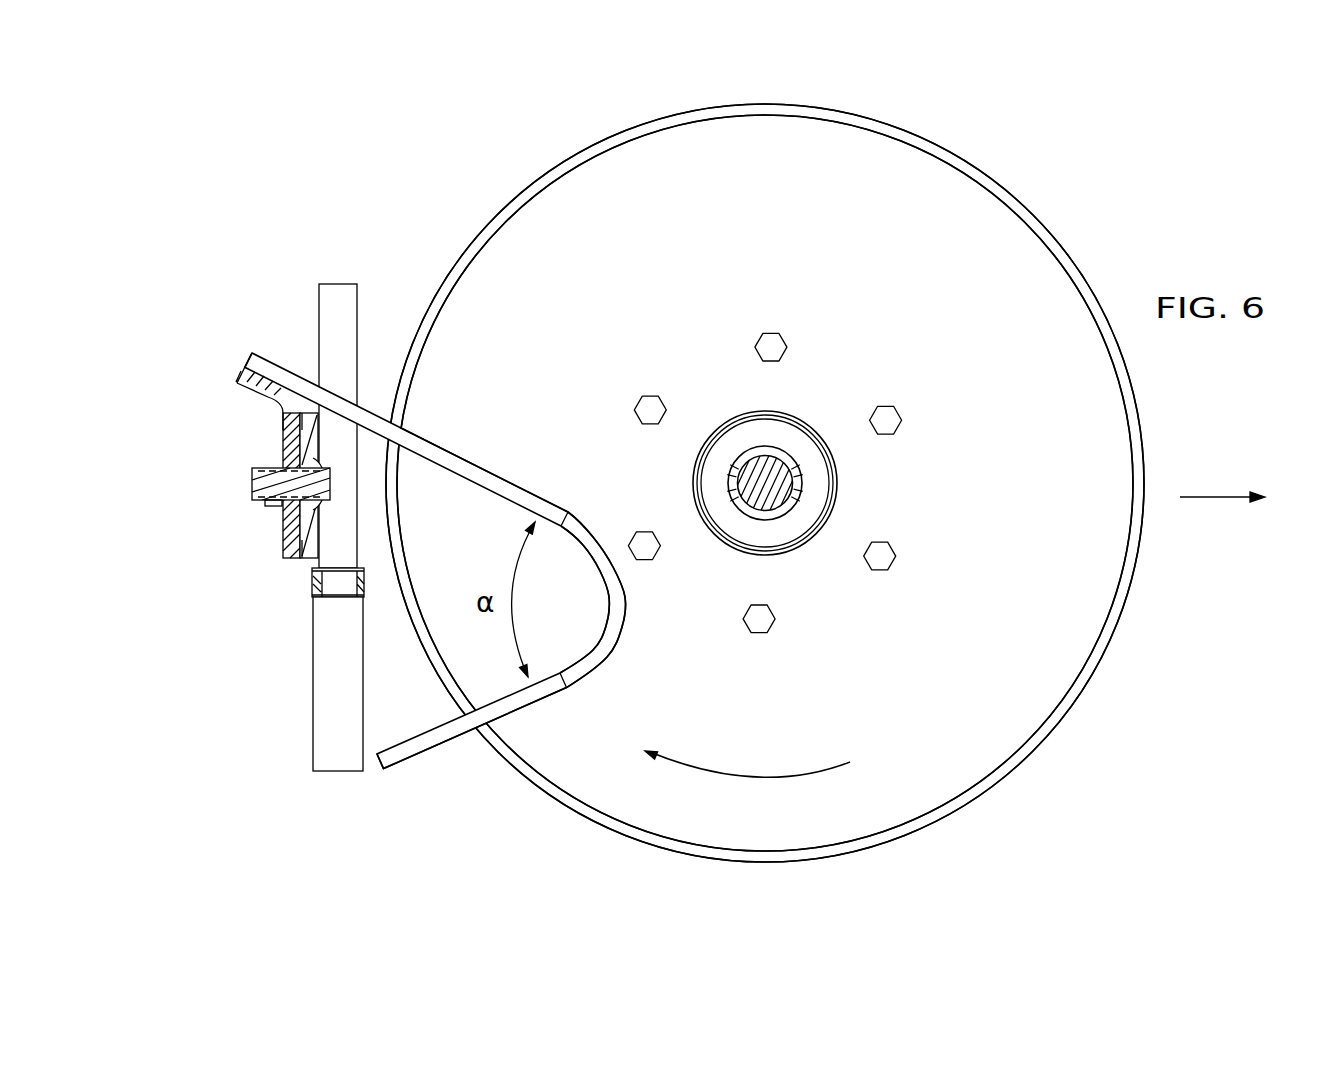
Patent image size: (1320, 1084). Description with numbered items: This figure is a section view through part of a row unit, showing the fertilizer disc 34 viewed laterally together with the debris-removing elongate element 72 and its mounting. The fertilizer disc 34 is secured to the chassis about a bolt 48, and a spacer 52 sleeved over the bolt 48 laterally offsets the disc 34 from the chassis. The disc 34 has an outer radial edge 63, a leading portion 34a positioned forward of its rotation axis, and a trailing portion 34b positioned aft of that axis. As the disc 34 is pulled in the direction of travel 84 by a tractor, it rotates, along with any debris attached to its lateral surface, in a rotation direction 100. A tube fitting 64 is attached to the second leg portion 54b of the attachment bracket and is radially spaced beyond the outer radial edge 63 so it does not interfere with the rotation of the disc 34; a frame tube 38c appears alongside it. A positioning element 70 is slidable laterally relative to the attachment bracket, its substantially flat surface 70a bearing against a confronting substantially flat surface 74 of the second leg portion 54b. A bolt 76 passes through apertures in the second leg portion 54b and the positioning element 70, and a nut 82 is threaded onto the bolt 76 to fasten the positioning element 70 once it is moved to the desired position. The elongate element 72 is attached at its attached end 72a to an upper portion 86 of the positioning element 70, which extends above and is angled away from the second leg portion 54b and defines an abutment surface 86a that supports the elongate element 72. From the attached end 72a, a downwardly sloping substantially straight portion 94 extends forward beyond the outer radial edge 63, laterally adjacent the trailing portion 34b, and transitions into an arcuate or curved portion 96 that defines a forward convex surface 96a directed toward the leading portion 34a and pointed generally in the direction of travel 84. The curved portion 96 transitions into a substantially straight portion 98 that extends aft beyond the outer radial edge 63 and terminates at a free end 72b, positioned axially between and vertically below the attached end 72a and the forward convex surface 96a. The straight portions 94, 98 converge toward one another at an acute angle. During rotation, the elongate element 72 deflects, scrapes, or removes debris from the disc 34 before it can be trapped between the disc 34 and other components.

The fertilizer disc 34 is at (688, 817).
The leading portion of the disc 34a is at (982, 230).
The trailing portion of the disc 34b is at (486, 292).
The outer radial edge 63 is at (582, 148).
The bolt 48 is at (765, 465).
The spacer 52 is at (777, 448).
The tube fitting 64 is at (330, 307).
The frame tube 38c is at (327, 697).
The elongate element 72 is at (502, 482).
The attached end 72a is at (268, 360).
The free end 72b is at (398, 770).
The substantially flat surface 74 is at (316, 452).
The substantially straight portion 94 is at (445, 443).
The arcuate or curved portion 96 is at (607, 608).
The forward convex surface 96a is at (627, 597).
The substantially straight portion 98 is at (510, 713).
The positioning element 70 is at (288, 543).
The substantially flat surface 70a is at (285, 432).
The second leg portion 54b is at (308, 548).
The bolt 76 is at (258, 486).
The nut 82 is at (262, 465).
The upper portion 86 is at (262, 404).
The abutment surface 86a is at (254, 394).
The rotation direction 100 is at (755, 776).
The direction of travel 84 is at (1222, 500).